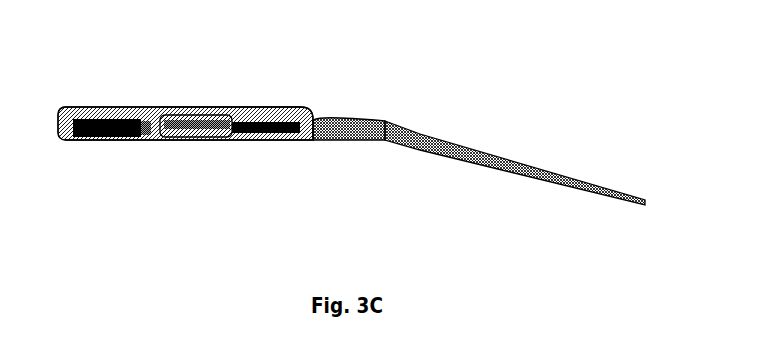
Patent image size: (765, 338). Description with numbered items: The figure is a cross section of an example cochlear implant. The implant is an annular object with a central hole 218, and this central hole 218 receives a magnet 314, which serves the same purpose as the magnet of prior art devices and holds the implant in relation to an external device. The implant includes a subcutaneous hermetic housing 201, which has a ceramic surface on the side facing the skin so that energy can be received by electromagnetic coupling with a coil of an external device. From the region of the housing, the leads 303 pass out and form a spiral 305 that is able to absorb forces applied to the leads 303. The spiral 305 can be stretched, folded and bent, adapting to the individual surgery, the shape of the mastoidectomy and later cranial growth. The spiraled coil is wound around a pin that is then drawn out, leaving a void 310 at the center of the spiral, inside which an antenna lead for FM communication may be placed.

The central hole 218 is at (181, 107).
The subcutaneous hermetic housing 201 is at (240, 107).
The magnet 314 is at (173, 136).
The leads 303 is at (292, 136).
The void 310 is at (383, 122).
The spiral 305 is at (450, 140).